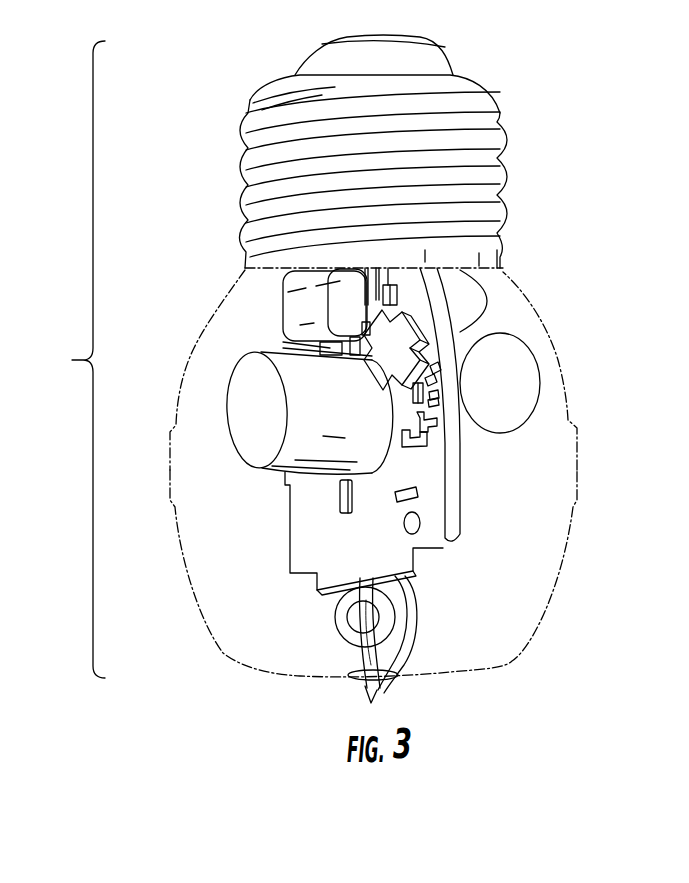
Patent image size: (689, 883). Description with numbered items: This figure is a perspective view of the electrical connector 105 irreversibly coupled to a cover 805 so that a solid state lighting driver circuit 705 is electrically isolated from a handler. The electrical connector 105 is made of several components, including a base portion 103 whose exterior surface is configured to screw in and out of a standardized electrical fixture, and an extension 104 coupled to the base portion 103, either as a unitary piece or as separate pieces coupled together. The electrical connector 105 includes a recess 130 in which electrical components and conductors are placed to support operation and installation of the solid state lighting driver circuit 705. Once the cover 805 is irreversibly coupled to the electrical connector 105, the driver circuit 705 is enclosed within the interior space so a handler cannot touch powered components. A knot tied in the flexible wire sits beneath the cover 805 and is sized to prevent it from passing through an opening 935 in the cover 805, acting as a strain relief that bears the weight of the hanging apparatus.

The base portion 103 is at (502, 118).
The extension 104 is at (526, 305).
The electrical connector 105 is at (67, 359).
The recess 130 is at (218, 369).
The solid state lighting driver circuit 705 is at (451, 541).
The cover 805 is at (557, 576).
The opening 935 is at (395, 680).